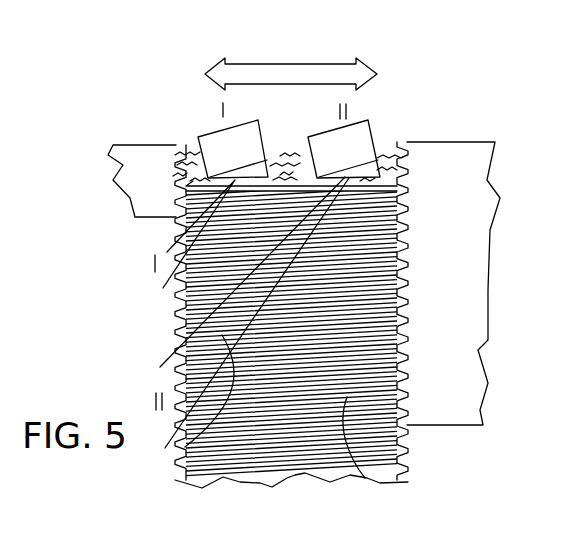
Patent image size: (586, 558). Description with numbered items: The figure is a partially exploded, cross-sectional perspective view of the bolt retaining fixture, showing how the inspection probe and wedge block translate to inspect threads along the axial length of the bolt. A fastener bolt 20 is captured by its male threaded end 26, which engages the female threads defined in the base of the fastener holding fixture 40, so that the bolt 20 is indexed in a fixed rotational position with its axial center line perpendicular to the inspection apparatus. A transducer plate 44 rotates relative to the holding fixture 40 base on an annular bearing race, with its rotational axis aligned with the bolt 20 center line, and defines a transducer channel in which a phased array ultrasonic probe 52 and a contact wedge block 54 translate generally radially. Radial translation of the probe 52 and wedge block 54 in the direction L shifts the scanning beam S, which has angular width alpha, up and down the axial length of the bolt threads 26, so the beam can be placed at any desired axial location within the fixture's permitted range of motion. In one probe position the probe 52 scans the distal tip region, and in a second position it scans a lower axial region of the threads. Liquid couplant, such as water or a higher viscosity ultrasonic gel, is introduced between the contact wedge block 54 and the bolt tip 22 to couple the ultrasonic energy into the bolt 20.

The fastener bolt 20 is at (255, 505).
The bolt tip 22 is at (290, 153).
The male threaded end 26 is at (365, 478).
The fastener holding fixture 40 is at (462, 378).
The transducer plate 44 is at (140, 180).
The phased array ultrasonic probe 52 is at (217, 145).
The contact wedge block 54 is at (258, 170).
The translation direction L is at (307, 73).
The scanning beam S is at (177, 455).